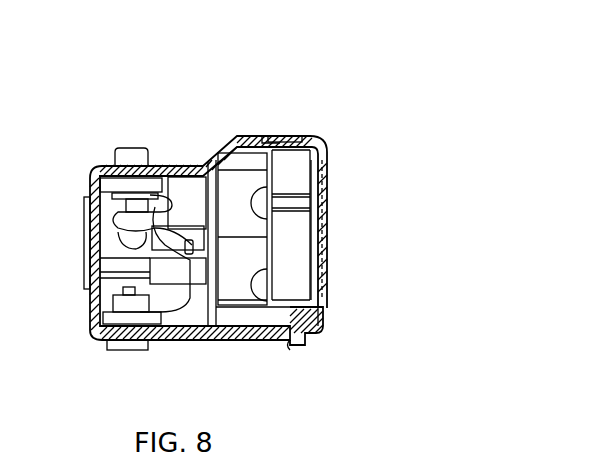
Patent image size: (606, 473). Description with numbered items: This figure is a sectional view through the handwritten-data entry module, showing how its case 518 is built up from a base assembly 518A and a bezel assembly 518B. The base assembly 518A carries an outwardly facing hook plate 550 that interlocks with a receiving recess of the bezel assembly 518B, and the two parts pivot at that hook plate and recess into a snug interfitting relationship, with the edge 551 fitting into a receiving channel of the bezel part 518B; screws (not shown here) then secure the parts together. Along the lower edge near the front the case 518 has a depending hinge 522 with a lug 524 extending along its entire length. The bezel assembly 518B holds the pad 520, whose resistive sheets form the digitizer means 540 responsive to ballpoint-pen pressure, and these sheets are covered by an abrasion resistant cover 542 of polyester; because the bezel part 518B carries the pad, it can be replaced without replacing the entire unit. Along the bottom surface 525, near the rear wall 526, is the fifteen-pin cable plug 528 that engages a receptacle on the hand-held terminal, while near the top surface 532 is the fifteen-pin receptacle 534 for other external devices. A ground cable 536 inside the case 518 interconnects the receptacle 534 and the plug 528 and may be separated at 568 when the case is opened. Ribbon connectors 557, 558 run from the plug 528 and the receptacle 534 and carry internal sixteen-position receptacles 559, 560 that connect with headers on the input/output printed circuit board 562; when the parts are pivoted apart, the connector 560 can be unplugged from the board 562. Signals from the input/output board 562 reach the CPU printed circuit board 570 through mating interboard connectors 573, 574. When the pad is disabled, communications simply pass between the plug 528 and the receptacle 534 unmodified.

The case 518 is at (232, 124).
The base assembly 518A is at (93, 172).
The bezel assembly 518B is at (312, 134).
The pad 520 is at (332, 186).
The hook plate 550 is at (300, 134).
The edge 551 is at (277, 134).
The top surface 532 is at (180, 165).
The receptacle 534 is at (117, 148).
The receptacle 560 is at (200, 165).
The ribbon connector 558 is at (100, 214).
The rear wall 526 is at (87, 228).
The ground cable 536 is at (92, 272).
The separable point of ground cable 568 is at (100, 258).
The receptacle 559 is at (92, 290).
The ribbon connector 557 is at (180, 340).
The cable plug 528 is at (128, 352).
The bottom surface 525 is at (210, 340).
The input/output printed circuit board 562 is at (232, 328).
The interboard connector 573 is at (255, 326).
The interboard connector 574 is at (262, 338).
The lug 524 is at (286, 343).
The hinge 522 is at (300, 345).
The CPU printed circuit board 570 is at (322, 310).
The abrasion resistant cover 542 is at (325, 218).
The digitizer means 540 is at (323, 258).